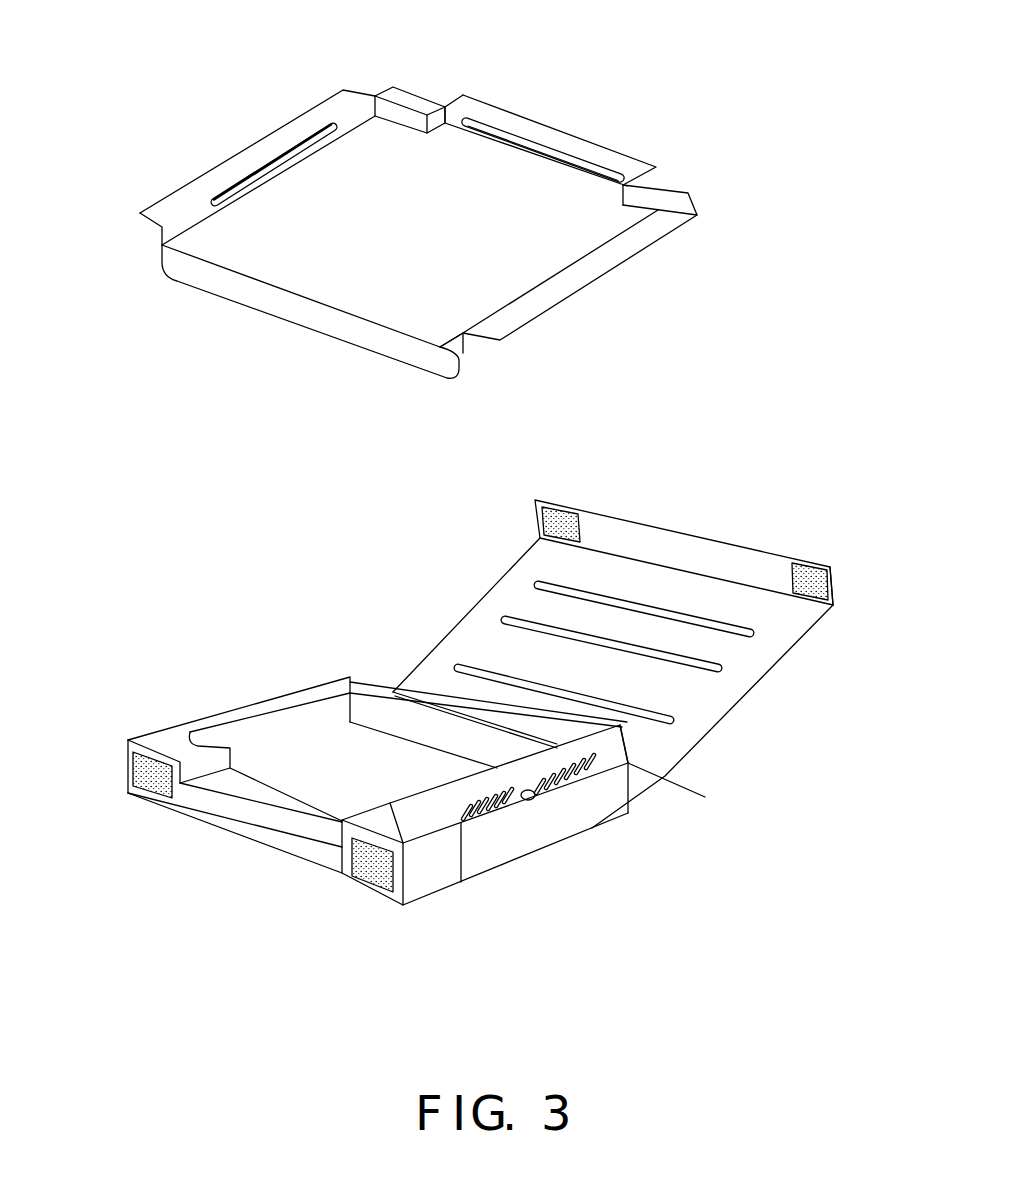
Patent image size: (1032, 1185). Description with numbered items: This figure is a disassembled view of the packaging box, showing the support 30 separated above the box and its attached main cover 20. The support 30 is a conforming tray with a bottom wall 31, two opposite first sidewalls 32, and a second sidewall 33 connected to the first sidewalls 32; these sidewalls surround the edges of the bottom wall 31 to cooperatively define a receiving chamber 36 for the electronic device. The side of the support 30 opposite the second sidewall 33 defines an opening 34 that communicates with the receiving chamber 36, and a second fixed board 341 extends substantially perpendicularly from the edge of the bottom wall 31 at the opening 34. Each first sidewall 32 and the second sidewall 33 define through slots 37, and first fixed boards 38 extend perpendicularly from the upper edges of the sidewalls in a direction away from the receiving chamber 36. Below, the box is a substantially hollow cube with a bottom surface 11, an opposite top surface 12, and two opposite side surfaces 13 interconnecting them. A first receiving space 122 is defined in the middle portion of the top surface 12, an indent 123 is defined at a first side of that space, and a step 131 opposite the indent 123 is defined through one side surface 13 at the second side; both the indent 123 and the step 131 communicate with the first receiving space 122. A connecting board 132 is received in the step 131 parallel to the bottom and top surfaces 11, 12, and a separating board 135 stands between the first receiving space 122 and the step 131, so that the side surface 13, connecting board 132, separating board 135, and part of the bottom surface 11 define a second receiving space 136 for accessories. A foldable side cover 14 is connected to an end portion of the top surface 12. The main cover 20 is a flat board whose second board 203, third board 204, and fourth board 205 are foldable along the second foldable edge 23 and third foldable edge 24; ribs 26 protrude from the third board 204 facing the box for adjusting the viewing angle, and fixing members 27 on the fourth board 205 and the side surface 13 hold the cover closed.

The support 30 is at (414, 207).
The bottom wall 31 is at (532, 268).
The first sidewall 32 is at (185, 213).
The second sidewall 33 is at (402, 113).
The opening 34 is at (455, 342).
The second fixed board 341 is at (393, 347).
The receiving chamber 36 is at (565, 194).
The through slot 37 is at (292, 157).
The first fixed board 38 is at (645, 240).
The bottom surface 11 is at (387, 798).
The top surface 12 is at (158, 740).
The side surface 13 is at (257, 830).
The step 131 is at (330, 832).
The connecting board 132 is at (210, 787).
The separating board 135 is at (267, 778).
The second receiving space 136 is at (417, 877).
The first receiving space 122 is at (314, 716).
The indent 123 is at (390, 697).
The side cover 14 is at (520, 776).
The main cover 20 is at (478, 659).
The second board 203 is at (640, 788).
The third board 204 is at (788, 630).
The fourth board 205 is at (720, 553).
The second foldable edge 23 is at (670, 777).
The third foldable edge 24 is at (833, 608).
The rib 26 is at (663, 722).
The fixing member 27 is at (557, 520).